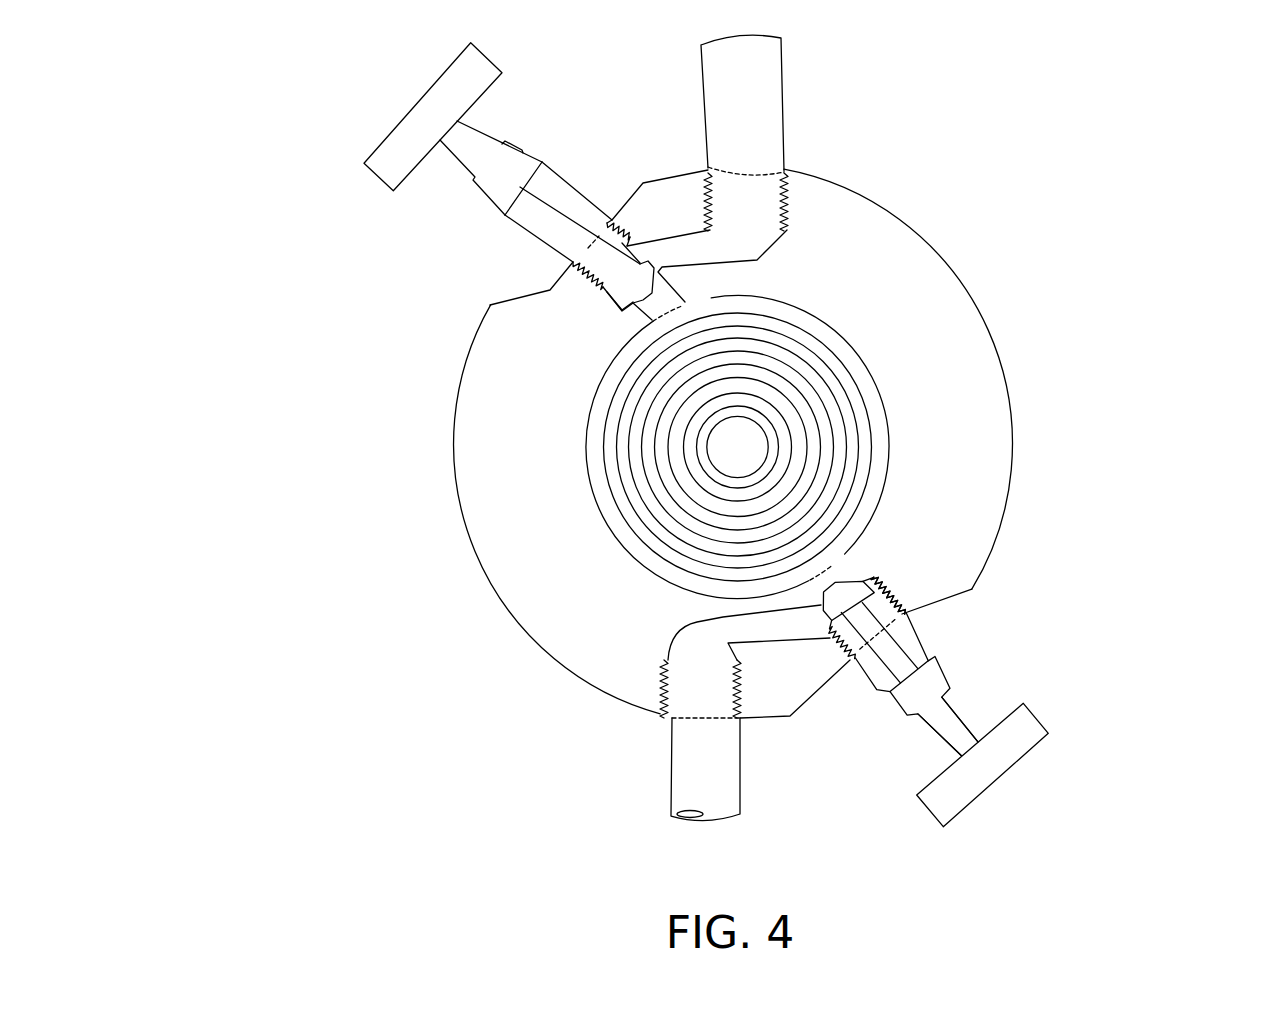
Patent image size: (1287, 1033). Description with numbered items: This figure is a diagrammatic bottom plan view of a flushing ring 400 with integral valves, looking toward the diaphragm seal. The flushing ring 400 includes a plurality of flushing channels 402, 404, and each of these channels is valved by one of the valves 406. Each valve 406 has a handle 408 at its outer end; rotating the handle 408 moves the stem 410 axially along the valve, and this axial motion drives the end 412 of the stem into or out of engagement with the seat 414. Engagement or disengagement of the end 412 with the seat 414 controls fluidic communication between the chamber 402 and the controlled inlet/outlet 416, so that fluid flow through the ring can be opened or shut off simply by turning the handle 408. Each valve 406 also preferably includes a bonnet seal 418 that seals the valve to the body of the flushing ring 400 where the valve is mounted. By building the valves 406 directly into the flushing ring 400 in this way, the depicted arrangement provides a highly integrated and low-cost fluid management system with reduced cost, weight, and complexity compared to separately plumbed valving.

The flushing ring 400 is at (975, 373).
The flushing channel 402 is at (838, 578).
The flushing channel 404 is at (640, 311).
The valve 406 is at (523, 145).
The handle 408 is at (993, 787).
The stem 410 is at (947, 752).
The end 412 is at (822, 604).
The seat 414 is at (820, 604).
The controlled inlet/outlet 416 is at (690, 752).
The bonnet seal 418 is at (902, 616).